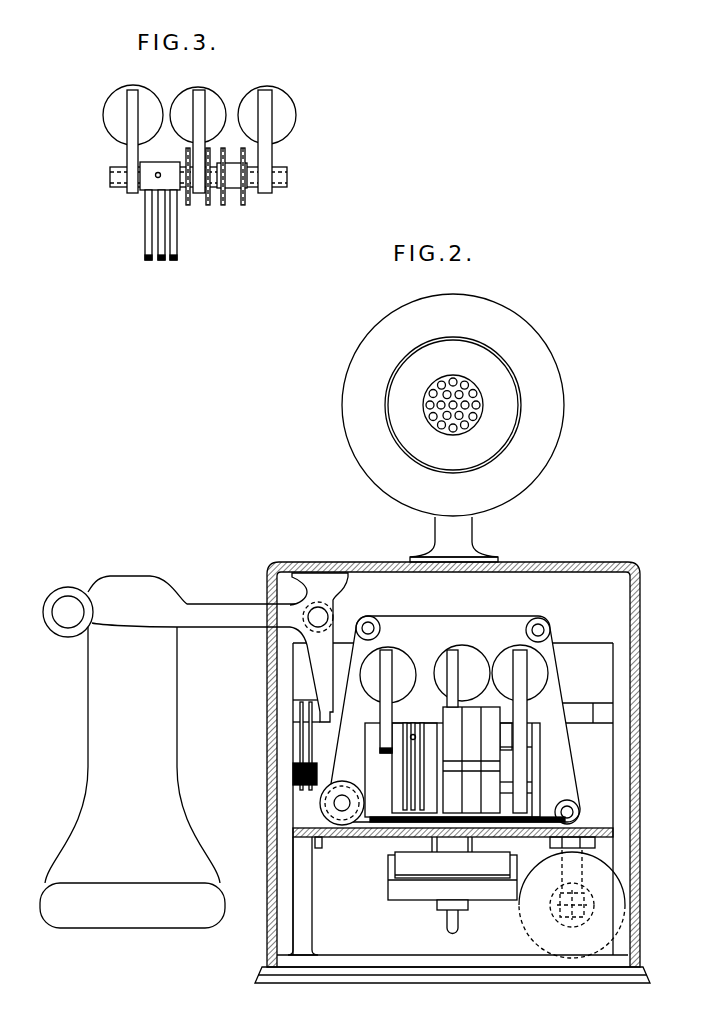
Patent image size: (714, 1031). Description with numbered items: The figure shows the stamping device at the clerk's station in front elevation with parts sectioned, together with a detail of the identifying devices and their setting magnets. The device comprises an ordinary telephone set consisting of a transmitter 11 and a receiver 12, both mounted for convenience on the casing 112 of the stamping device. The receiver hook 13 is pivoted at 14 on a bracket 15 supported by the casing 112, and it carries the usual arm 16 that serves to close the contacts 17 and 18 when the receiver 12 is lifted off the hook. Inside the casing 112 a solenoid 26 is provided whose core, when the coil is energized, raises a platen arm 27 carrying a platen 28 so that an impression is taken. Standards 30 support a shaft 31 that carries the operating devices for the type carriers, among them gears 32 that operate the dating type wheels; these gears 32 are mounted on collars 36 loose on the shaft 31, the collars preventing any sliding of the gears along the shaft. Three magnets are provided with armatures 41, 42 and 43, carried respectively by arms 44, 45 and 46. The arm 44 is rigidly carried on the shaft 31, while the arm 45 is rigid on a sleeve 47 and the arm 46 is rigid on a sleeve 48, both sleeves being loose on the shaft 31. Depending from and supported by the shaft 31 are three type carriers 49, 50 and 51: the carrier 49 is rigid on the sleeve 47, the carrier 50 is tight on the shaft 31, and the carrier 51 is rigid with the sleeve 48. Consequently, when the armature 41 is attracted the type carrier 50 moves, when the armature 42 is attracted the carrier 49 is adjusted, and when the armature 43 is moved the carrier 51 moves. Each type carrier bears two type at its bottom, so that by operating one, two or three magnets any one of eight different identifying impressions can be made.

In FIG. 2, the transmitter 11 is at (556, 449).
In FIG. 2, the receiver 12 is at (88, 751).
In FIG. 2, the receiver hook 13 is at (220, 604).
In FIG. 2, the pivot 14 is at (326, 618).
In FIG. 2, the bracket 15 is at (330, 594).
In FIG. 2, the arm 16 is at (453, 720).
In FIG. 2, the contact 17 is at (298, 735).
In FIG. 2, the contact 18 is at (313, 750).
In FIG. 2, the casing 112 is at (268, 760).
In FIG. 2, the solenoid 26 is at (527, 923).
In FIG. 2, the platen arm 27 is at (459, 928).
In FIG. 2, the platen 28 is at (452, 876).
In FIG. 2, the standards 30 is at (365, 765).
In FIG. 3, the shaft 31 is at (287, 185).
In FIG. 3, the gears 32 is at (245, 200).
In FIG. 3, the collars 36 is at (238, 194).
In FIG. 3, the armature 41 is at (287, 106).
In FIG. 3, the armature 42 is at (212, 101).
In FIG. 2, the armature 42 is at (473, 662).
In FIG. 3, the armature 43 is at (118, 101).
In FIG. 2, the armature 43 is at (405, 661).
In FIG. 3, the arm 44 is at (273, 155).
In FIG. 2, the arm 44 is at (537, 677).
In FIG. 3, the arm 45 is at (196, 140).
In FIG. 2, the arm 45 is at (471, 760).
In FIG. 3, the arm 46 is at (130, 152).
In FIG. 3, the sleeve 47 is at (182, 195).
In FIG. 3, the sleeve 48 is at (140, 188).
In FIG. 3, the type carrier 49 is at (175, 252).
In FIG. 2, the type carrier 49 is at (422, 780).
In FIG. 3, the type carrier 50 is at (161, 260).
In FIG. 2, the type carrier 50 is at (405, 767).
In FIG. 3, the type carrier 51 is at (146, 256).
In FIG. 2, the type carrier 51 is at (404, 799).